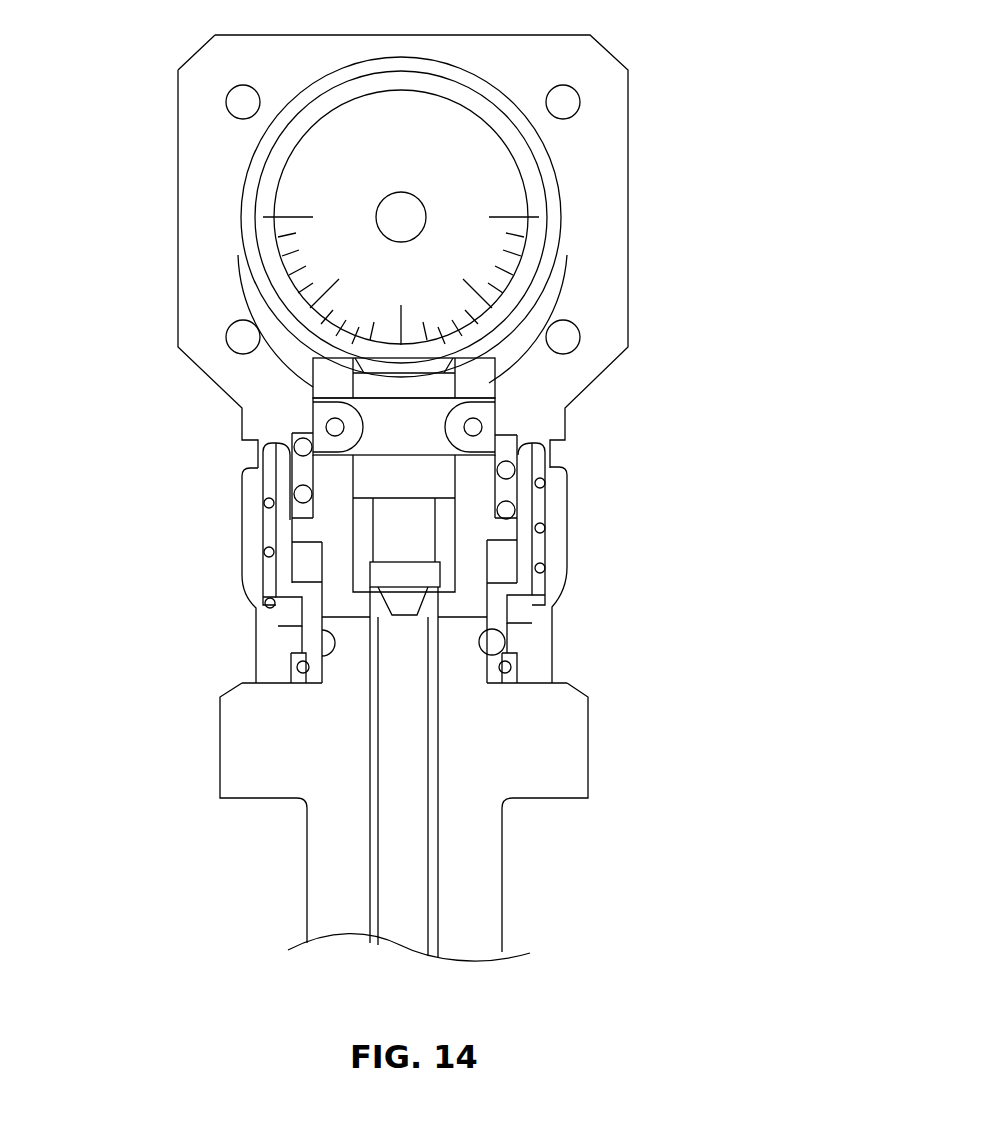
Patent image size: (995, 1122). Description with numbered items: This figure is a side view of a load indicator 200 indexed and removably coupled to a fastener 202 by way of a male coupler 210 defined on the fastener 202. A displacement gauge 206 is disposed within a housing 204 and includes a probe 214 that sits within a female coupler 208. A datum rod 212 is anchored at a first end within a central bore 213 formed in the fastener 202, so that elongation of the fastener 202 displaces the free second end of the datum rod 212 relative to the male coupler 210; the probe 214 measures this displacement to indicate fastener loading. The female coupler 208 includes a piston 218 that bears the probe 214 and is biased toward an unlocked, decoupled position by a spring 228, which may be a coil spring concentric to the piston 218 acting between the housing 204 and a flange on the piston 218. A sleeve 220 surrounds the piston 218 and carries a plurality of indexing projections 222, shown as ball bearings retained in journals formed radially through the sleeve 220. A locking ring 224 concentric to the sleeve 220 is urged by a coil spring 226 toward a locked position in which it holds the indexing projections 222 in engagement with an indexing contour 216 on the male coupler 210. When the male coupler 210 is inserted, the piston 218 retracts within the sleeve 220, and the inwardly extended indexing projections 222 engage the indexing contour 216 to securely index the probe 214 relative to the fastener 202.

The load indicator 200 is at (580, 70).
The fastener 202 is at (560, 748).
The housing 204 is at (207, 208).
The displacement gauge 206 is at (505, 190).
The female coupler 208 is at (310, 626).
The male coupler 210 is at (343, 683).
The datum rod 212 is at (398, 828).
The central bore 213 is at (440, 912).
The probe 214 is at (401, 605).
The indexing contour 216 is at (332, 648).
The piston 218 is at (510, 508).
The sleeve 220 is at (527, 548).
The indexing projections 222 is at (495, 647).
The locking ring 224 is at (250, 517).
The coil spring 226 is at (542, 568).
The spring 228 is at (530, 498).